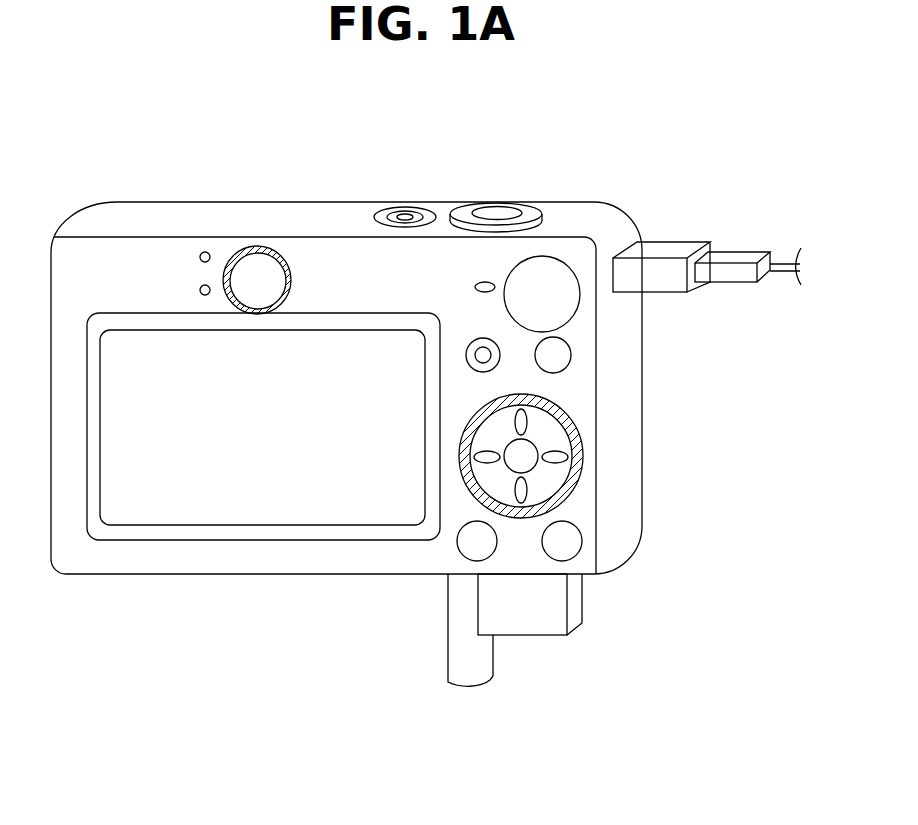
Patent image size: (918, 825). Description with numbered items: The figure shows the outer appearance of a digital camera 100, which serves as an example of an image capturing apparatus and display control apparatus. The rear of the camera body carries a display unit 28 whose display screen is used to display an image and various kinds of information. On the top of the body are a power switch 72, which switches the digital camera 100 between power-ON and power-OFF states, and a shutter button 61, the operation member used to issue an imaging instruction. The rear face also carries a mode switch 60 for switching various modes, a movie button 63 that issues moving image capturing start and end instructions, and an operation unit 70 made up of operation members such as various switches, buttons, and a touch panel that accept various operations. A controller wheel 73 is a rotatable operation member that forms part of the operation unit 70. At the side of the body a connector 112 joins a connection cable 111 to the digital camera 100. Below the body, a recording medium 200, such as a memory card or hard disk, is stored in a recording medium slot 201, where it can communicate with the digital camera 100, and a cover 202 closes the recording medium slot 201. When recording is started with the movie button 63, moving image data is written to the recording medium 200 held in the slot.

The digital camera 100 is at (131, 619).
The display unit 28 is at (159, 347).
The power switch 72 is at (405, 207).
The shutter button 61 is at (495, 213).
The mode switch 60 is at (567, 308).
The movie button 63 is at (567, 362).
The controller wheel 73 is at (492, 404).
The operation unit 70 is at (499, 361).
The connector 112 is at (663, 243).
The connection cable 111 is at (733, 258).
The recording medium 200 is at (543, 626).
The recording medium slot 201 is at (497, 576).
The cover 202 is at (470, 688).